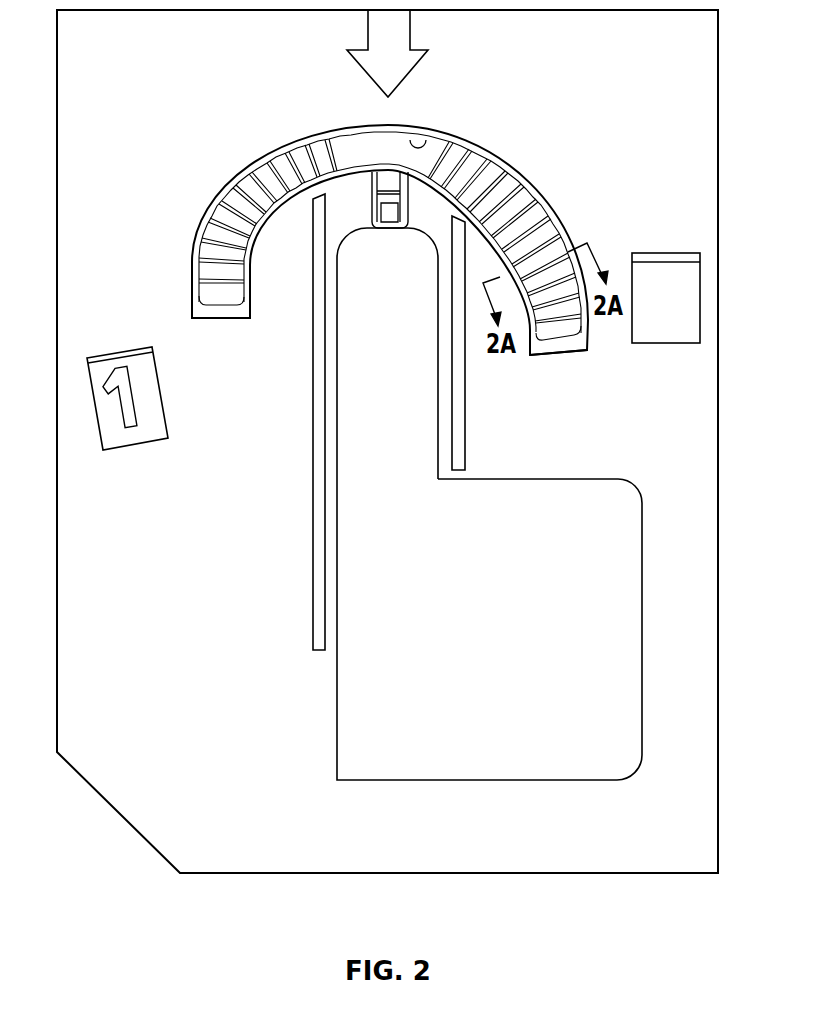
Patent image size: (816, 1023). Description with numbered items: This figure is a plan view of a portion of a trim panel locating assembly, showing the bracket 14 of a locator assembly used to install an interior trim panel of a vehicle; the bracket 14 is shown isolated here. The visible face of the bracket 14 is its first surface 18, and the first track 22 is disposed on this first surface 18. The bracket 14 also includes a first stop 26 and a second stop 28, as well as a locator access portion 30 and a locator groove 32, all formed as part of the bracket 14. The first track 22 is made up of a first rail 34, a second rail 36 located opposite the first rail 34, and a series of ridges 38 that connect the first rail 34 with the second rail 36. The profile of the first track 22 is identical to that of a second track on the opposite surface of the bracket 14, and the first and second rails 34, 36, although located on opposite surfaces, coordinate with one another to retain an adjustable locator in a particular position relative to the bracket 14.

The bracket 14 is at (258, 874).
The first surface 18 is at (155, 633).
The first track 22 is at (414, 142).
The first stop 26 is at (118, 350).
The second stop 28 is at (699, 303).
The locator access portion 30 is at (497, 780).
The locator groove 32 is at (437, 374).
The first rail 34 is at (537, 354).
The second rail 36 is at (461, 137).
The series of ridges 38 is at (297, 178).